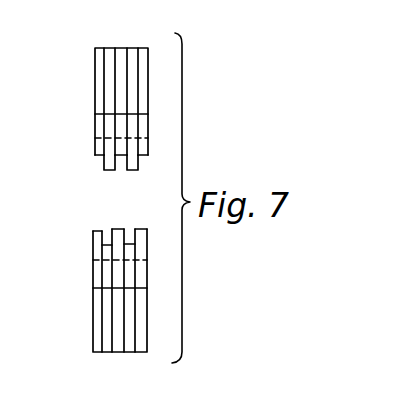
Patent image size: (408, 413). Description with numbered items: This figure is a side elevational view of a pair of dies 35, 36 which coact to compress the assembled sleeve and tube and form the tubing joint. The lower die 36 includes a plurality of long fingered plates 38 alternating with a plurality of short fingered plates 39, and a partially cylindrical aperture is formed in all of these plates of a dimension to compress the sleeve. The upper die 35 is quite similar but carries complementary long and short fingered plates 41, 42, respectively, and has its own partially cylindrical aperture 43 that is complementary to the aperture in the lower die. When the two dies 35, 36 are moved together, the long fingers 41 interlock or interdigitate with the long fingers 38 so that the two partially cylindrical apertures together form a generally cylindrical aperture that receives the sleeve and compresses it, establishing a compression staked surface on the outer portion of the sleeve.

The die 35 is at (117, 77).
The partially cylindrical aperture 43 is at (120, 140).
The short fingered plates 42 is at (122, 149).
The long fingered plates 41 is at (110, 171).
The die 36 is at (108, 330).
The long fingered plates 38 is at (142, 229).
The short fingered plates 39 is at (130, 253).